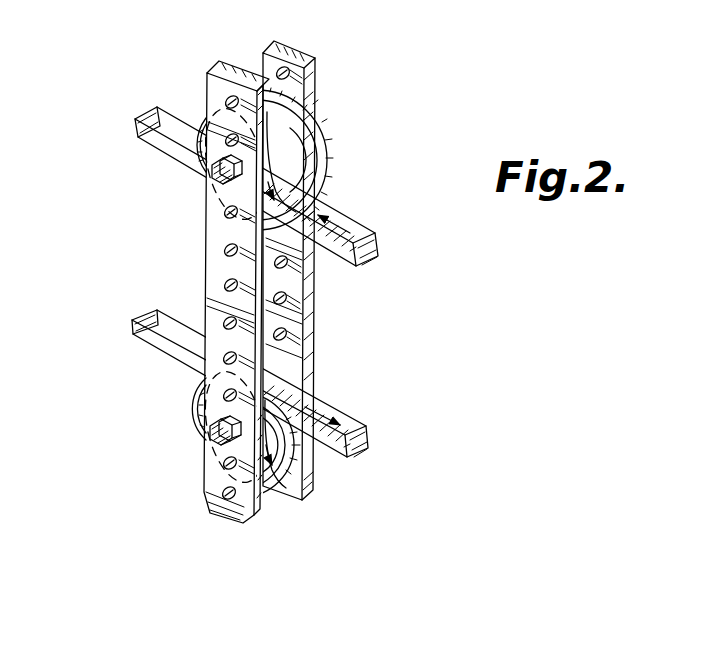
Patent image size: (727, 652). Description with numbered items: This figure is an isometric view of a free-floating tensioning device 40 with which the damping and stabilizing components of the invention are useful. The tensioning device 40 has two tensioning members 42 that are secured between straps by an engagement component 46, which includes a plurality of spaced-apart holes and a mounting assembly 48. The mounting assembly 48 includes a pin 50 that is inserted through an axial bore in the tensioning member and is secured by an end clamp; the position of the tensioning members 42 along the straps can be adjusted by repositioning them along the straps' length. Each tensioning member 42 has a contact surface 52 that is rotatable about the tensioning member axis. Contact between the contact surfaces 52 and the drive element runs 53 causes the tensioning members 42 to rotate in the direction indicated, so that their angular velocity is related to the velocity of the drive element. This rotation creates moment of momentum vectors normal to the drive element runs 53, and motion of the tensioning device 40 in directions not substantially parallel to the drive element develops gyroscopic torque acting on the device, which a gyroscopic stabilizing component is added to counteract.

The tensioning device 40 is at (432, 97).
The tensioning members 42 is at (322, 142).
The engagement component 46 is at (196, 176).
The mounting assembly 48 is at (222, 187).
The pin 50 is at (213, 166).
The contact surface 52 is at (300, 174).
The drive element runs 53 is at (378, 245).